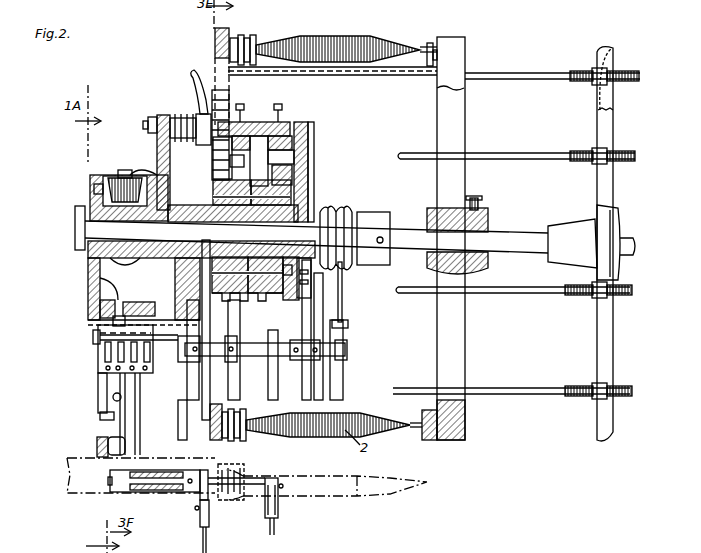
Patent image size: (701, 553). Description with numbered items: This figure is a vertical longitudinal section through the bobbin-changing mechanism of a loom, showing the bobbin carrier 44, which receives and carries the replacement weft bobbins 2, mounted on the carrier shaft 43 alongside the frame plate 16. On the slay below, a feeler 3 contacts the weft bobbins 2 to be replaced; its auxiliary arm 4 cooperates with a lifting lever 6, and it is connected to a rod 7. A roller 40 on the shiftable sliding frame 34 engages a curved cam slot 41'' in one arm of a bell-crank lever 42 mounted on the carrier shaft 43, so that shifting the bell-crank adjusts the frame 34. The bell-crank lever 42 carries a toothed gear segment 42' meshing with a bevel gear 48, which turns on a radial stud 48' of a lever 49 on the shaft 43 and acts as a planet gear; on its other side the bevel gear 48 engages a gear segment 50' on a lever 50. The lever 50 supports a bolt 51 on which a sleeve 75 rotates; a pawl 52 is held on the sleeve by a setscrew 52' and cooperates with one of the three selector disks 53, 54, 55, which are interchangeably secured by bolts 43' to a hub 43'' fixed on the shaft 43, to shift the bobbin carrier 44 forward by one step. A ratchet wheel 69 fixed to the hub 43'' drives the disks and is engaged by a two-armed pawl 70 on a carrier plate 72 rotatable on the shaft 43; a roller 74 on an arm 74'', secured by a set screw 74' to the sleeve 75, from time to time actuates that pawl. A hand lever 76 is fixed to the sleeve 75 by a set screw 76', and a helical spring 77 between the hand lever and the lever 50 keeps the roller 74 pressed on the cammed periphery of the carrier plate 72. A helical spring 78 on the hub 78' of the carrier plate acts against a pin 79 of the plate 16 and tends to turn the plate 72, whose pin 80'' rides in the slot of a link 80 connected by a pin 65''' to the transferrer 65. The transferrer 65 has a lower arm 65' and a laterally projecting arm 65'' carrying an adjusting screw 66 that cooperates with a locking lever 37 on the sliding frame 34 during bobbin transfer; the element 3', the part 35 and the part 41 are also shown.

The weft bobbin 2 is at (362, 40).
The feeler 3 is at (286, 506).
The carriage slide 3' is at (154, 496).
The auxiliary arm 4 is at (115, 460).
The lifting lever 6 is at (104, 418).
The rod 7 is at (208, 522).
The frame plate 16 is at (178, 268).
The sliding frame 34 is at (98, 355).
The rod 35 is at (93, 336).
The locking lever 37 is at (128, 437).
The roller 40 is at (134, 306).
The housing base 41 is at (115, 322).
The cam slot 41'' is at (86, 289).
The bell-crank lever 42 is at (72, 288).
The toothed gear segment 42' is at (80, 170).
The carrier shaft 43 is at (288, 216).
The bolts 43' is at (216, 186).
The hub 43'' is at (235, 192).
The bobbin carrier 44 is at (229, 30).
The bevel gear 48 is at (117, 159).
The radial stud 48' is at (94, 191).
The lever 49 is at (124, 269).
The lever 50 is at (151, 98).
The gear segment 50' is at (149, 162).
The bolt 51 is at (148, 122).
The pawl 52 is at (217, 160).
The setscrew 52' is at (247, 97).
The selector disk 53 is at (222, 298).
The selector disk 54 is at (245, 343).
The selector disk 55 is at (258, 298).
The transferrer 65 is at (172, 420).
The lower arm 65' is at (186, 330).
The laterally projecting arm 65'' is at (282, 365).
The pin 65''' is at (322, 353).
The adjusting screw 66 is at (112, 398).
The ratchet wheel 69 is at (292, 355).
The two-armed pawl 70 is at (294, 173).
The carrier plate 72 is at (305, 125).
The roller 74 is at (329, 172).
The set screw 74' is at (295, 103).
The arm 74'' is at (322, 152).
The sleeve 75 is at (266, 128).
The hand lever 76 is at (195, 80).
The set screw 76' is at (193, 136).
The helical spring 77 is at (178, 114).
The helical spring 78 is at (335, 226).
The hub 78' is at (372, 219).
The pin 79 is at (348, 322).
The link 80 is at (353, 336).
The pin 80'' is at (345, 278).